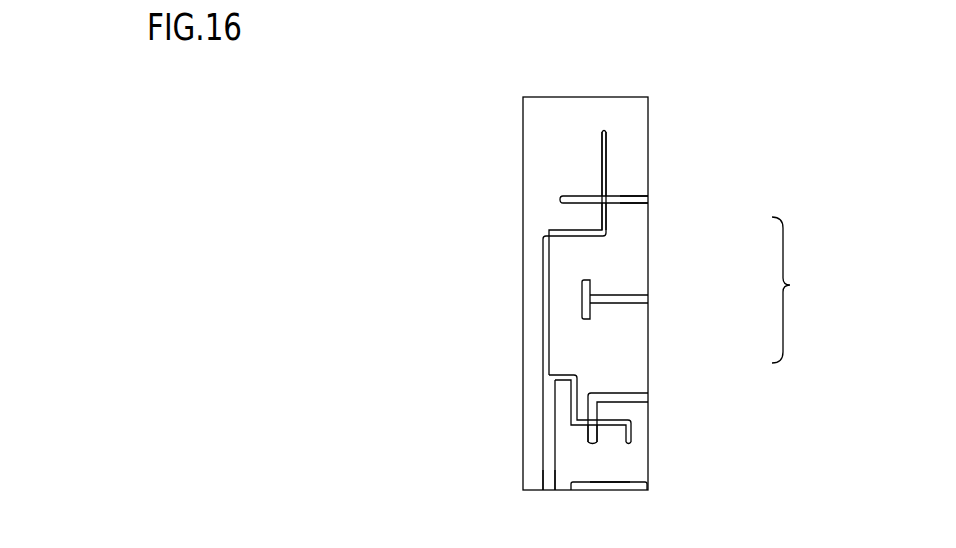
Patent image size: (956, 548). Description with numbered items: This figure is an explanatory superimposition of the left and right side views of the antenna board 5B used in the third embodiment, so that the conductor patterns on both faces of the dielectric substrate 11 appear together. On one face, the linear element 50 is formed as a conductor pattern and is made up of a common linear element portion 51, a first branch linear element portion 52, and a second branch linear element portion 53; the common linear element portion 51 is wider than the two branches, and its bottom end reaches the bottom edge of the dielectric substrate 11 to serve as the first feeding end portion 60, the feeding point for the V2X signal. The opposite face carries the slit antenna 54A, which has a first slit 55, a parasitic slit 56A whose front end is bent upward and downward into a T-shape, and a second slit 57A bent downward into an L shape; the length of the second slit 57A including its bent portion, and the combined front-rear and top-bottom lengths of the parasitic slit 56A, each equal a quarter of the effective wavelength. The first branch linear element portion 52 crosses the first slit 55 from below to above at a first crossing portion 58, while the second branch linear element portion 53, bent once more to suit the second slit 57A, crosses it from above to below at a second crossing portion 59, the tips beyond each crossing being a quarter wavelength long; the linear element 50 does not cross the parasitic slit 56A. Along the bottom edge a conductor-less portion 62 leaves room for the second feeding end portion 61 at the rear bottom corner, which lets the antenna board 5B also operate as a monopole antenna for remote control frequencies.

The antenna board 5B is at (506, 127).
The dielectric substrate 11 is at (523, 180).
The linear element 50 is at (538, 309).
The common linear element portion 51 is at (548, 422).
The first branch linear element portion 52 is at (606, 151).
The second branch linear element portion 53 is at (634, 430).
The slit antenna 54A is at (811, 290).
The first slit 55 is at (643, 201).
The parasitic slit 56A is at (642, 300).
The second slit 57A is at (648, 402).
The first crossing portion 58 is at (608, 197).
The second crossing portion 59 is at (600, 425).
The first feeding end portion 60 is at (549, 491).
The second feeding end portion 61 is at (650, 491).
The conductor-less portion 62 is at (604, 492).